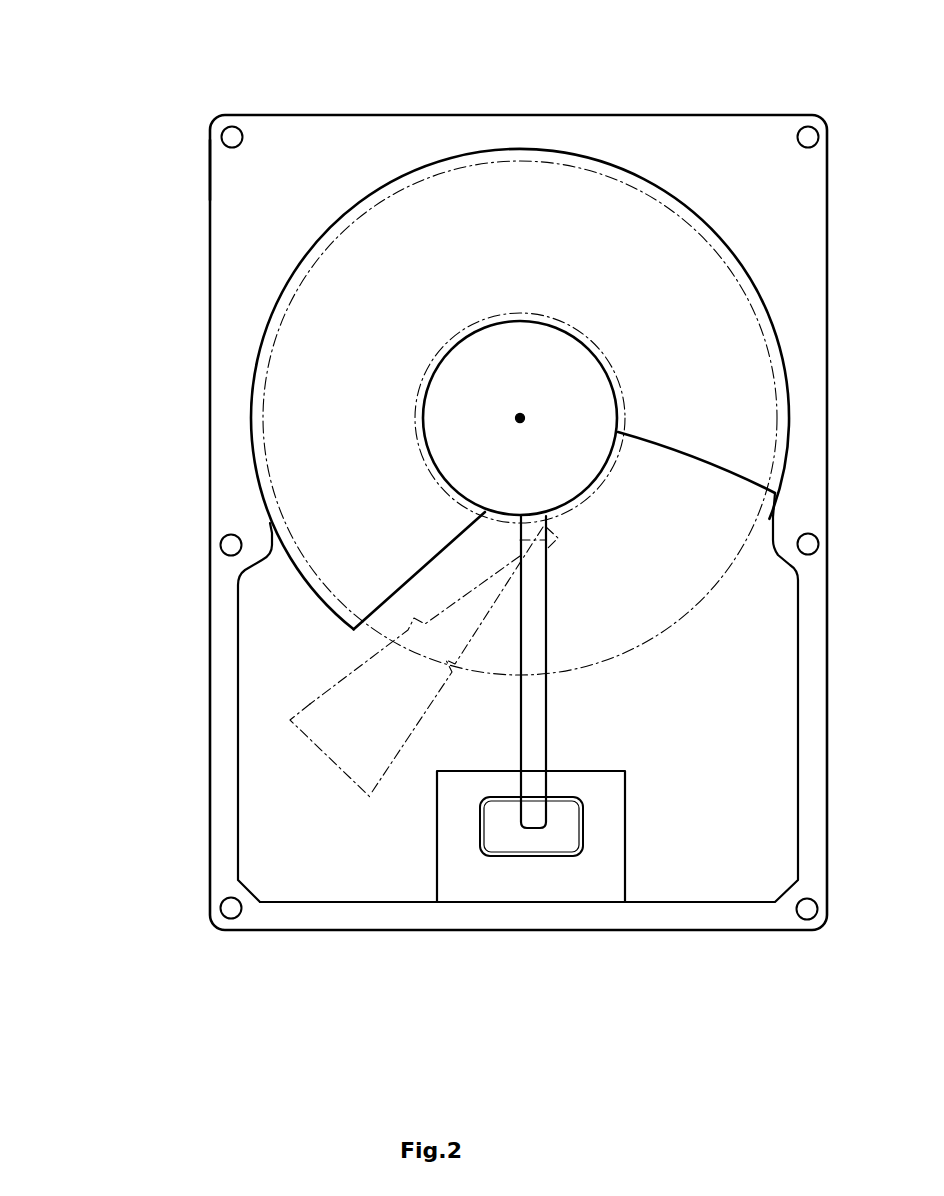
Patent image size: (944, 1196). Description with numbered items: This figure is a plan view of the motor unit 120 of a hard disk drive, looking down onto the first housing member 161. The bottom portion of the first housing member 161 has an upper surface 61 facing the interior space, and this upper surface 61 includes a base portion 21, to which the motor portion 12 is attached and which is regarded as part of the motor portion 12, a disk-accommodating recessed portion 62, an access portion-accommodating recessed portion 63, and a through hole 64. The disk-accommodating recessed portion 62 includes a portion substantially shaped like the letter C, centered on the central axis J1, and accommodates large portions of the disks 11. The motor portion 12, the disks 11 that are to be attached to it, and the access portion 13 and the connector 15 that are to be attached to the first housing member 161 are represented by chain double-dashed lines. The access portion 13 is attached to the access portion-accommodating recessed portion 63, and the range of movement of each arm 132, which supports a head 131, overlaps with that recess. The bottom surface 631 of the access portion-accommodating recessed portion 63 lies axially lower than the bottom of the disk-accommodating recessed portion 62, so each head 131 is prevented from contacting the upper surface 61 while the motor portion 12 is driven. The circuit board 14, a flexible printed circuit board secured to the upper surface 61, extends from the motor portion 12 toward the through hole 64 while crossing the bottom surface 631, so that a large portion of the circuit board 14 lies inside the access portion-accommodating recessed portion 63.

The motor unit 120 is at (227, 75).
The first housing member 161 is at (224, 163).
The disk-accommodating recessed portion 62 is at (330, 263).
The disk 11 is at (287, 267).
The upper surface 61 is at (138, 294).
The base portion 21 is at (448, 387).
The central axis J1 is at (517, 418).
The head 131 is at (493, 538).
The arm 132 is at (493, 593).
The access portion 13 is at (378, 676).
The circuit board 14 is at (533, 782).
The connector 15 is at (478, 827).
The access portion-accommodating recessed portion 63 is at (305, 880).
The bottom surface 631 is at (355, 877).
The through hole 64 is at (572, 841).
The motor portion 12 is at (520, 312).